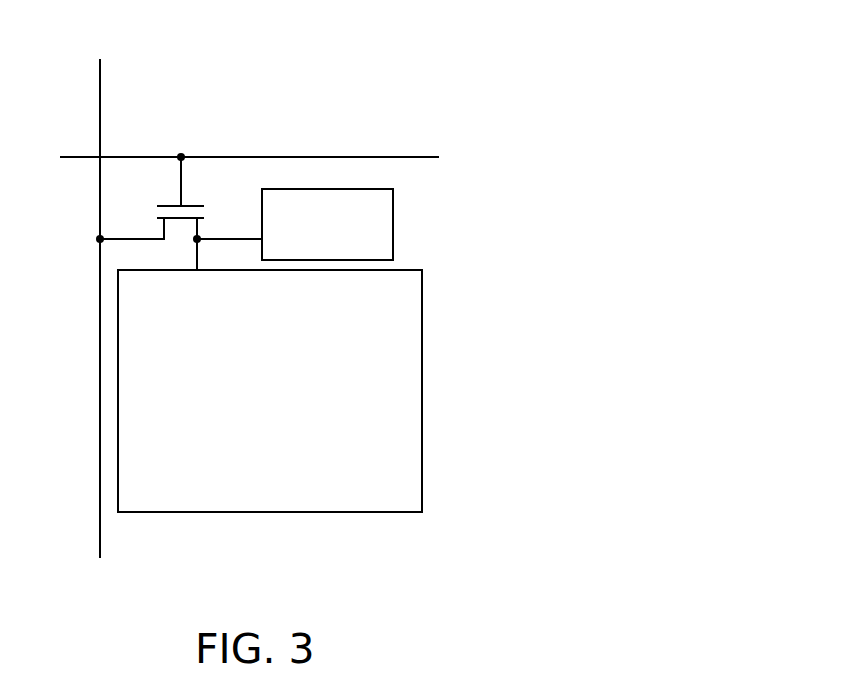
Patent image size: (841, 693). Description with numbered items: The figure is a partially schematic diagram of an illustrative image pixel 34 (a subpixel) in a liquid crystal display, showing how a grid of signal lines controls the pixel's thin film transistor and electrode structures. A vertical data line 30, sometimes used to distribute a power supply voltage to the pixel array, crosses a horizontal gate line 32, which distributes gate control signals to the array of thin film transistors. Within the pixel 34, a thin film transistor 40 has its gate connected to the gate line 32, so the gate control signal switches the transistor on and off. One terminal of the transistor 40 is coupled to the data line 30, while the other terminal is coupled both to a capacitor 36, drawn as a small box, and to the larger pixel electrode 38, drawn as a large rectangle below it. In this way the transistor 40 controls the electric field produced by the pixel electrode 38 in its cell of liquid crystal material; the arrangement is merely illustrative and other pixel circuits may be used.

The data line 30 is at (100, 529).
The gate line 32 is at (320, 157).
The pixel 34 is at (456, 60).
The capacitor 36 is at (393, 215).
The pixel electrode 38 is at (405, 357).
The thin film transistor 40 is at (148, 201).